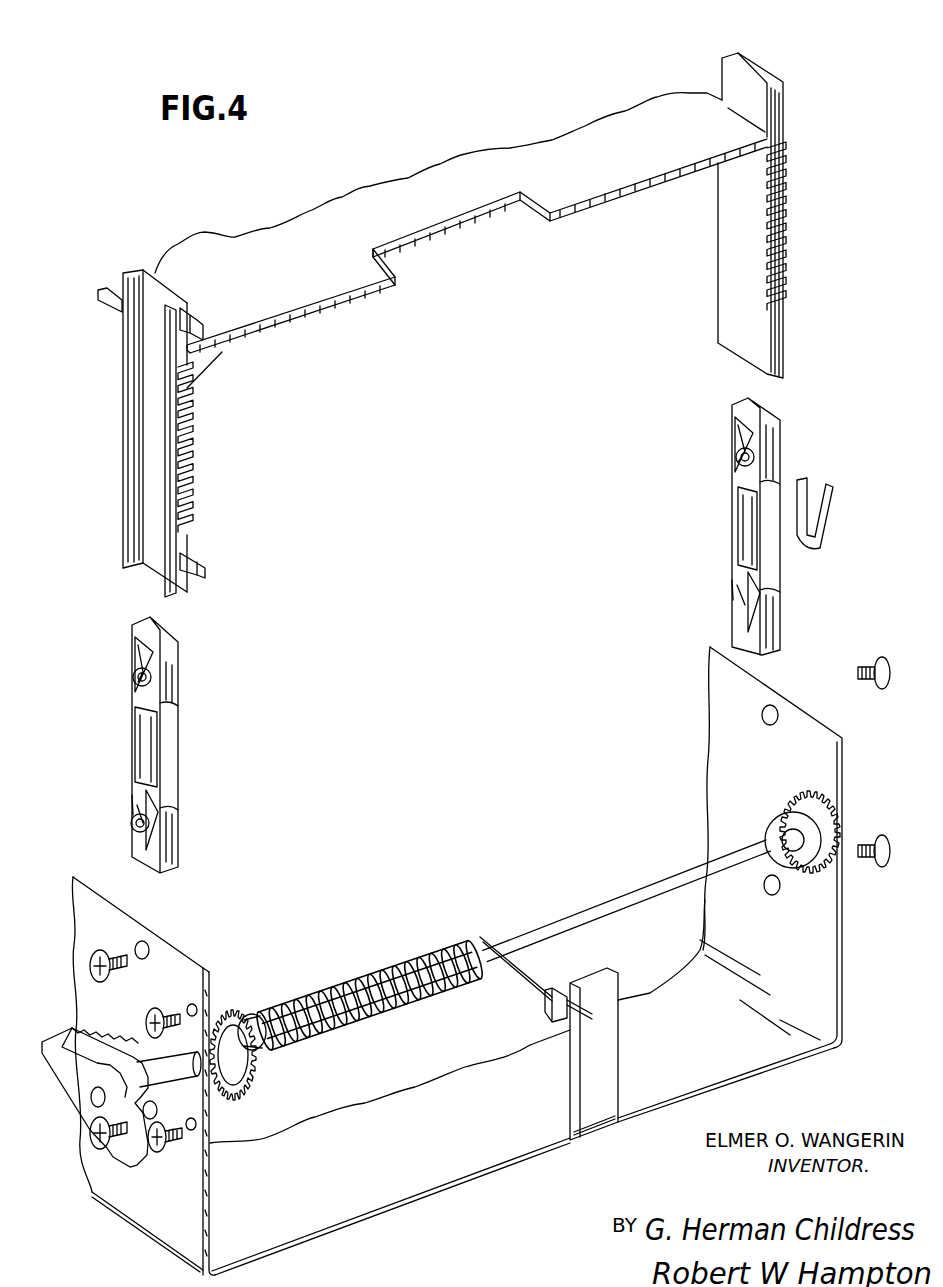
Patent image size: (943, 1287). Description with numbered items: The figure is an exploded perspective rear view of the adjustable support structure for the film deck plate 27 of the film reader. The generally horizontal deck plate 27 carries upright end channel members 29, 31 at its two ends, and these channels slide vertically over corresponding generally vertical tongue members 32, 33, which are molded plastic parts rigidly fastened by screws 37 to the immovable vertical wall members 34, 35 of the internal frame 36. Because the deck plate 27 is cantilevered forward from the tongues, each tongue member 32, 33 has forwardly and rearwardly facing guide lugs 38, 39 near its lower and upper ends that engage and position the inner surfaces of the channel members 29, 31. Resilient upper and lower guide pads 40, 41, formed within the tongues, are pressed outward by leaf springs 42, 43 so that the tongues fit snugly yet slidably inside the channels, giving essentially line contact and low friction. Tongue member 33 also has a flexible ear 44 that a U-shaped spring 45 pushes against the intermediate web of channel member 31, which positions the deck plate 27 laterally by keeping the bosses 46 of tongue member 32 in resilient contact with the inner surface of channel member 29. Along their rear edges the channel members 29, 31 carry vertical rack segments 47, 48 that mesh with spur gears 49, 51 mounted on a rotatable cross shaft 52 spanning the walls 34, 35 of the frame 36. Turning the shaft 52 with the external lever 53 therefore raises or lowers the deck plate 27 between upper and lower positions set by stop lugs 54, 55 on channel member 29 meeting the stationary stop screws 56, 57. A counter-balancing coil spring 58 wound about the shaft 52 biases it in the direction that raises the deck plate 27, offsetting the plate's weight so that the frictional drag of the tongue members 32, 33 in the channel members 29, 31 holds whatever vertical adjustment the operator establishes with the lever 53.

The film deck plate 27 is at (650, 130).
The upright end channel member 29 is at (178, 303).
The upright end channel member 31 is at (780, 117).
The tongue member 32 is at (176, 736).
The tongue member 33 is at (775, 565).
The vertical wall member 34 is at (195, 1218).
The vertical wall member 35 is at (824, 957).
The internal frame 36 is at (682, 1083).
The screws 37 is at (884, 688).
The guide lug 38 is at (730, 592).
The guide lug 39 is at (781, 461).
The upper guide pad 40 is at (735, 457).
The lower guide pad 41 is at (775, 620).
The leaf spring 42 is at (740, 440).
The leaf spring 43 is at (768, 605).
The flexible ear 44 is at (742, 535).
The U-shaped spring 45 is at (838, 516).
The bosses 46 is at (175, 660).
The vertical rack segment 47 is at (192, 457).
The vertical rack segment 48 is at (787, 204).
The spur gear 49 is at (243, 1083).
The spur gear 51 is at (822, 871).
The cross shaft 52 is at (583, 914).
The external lever 53 is at (65, 1036).
The stop lug 54 is at (200, 576).
The stop lug 55 is at (190, 310).
The stop screw 56 is at (190, 1136).
The stop screw 57 is at (170, 1010).
The counter-balancing coil spring 58 is at (385, 975).